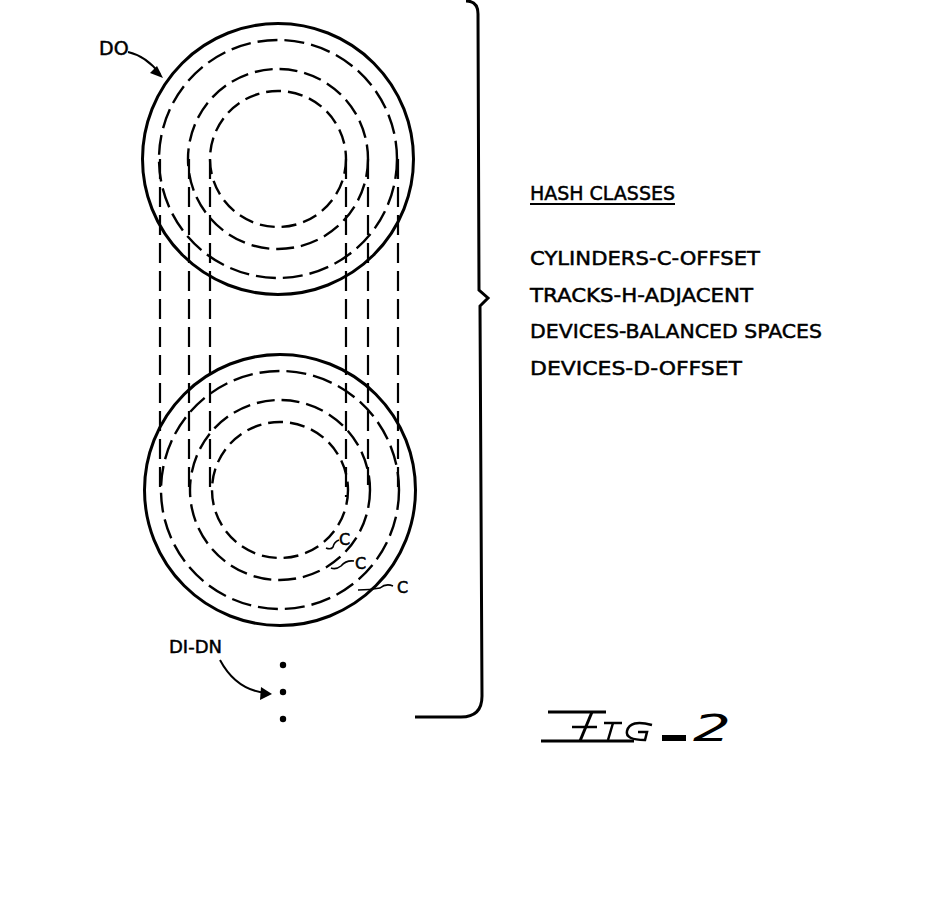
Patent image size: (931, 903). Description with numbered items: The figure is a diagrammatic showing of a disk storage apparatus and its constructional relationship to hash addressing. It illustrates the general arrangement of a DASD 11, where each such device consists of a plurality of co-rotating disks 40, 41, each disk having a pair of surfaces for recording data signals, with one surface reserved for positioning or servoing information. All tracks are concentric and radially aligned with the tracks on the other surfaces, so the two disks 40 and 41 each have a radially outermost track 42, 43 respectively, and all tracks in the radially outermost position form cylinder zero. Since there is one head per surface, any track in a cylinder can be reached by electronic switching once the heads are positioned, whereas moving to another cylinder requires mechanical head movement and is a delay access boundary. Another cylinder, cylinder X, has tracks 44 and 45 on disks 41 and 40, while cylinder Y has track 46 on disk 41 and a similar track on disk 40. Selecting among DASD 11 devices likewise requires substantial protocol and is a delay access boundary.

The DASD 11 is at (410, 624).
The disk 40 is at (411, 119).
The disk 41 is at (336, 610).
The radially outermost track 42 is at (388, 545).
The radially outermost track 43 is at (398, 161).
The track 44 is at (370, 497).
The track 45 is at (344, 100).
The track 46 is at (338, 526).